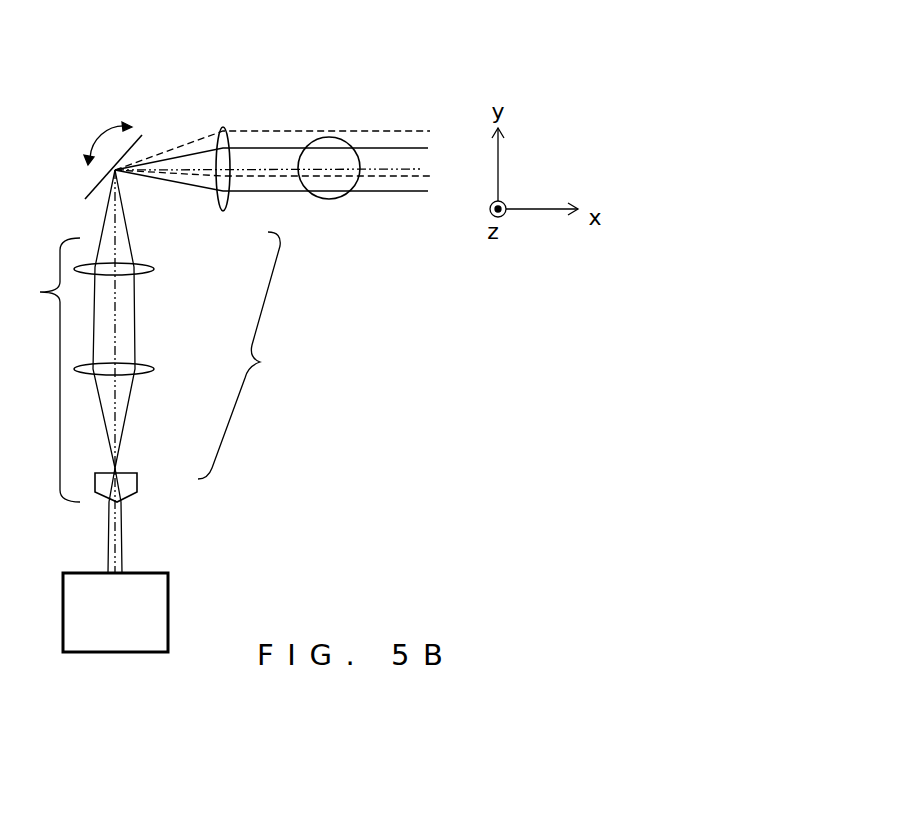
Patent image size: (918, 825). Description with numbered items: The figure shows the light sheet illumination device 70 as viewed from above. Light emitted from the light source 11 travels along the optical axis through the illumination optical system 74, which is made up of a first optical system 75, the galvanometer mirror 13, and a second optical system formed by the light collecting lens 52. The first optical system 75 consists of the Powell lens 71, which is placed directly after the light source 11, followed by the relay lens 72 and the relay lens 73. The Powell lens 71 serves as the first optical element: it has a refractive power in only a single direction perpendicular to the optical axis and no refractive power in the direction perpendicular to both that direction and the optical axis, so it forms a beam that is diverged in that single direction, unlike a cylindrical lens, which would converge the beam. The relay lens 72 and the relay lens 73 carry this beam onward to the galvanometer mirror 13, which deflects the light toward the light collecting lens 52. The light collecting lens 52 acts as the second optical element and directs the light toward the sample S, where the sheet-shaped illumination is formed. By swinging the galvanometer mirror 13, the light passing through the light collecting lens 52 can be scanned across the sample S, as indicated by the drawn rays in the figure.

The light sheet illumination device 70 is at (497, 48).
The galvanometer mirror 13 is at (97, 190).
The light collecting lens 52 is at (224, 210).
The scanning spot S is at (347, 139).
The relay lens 73 is at (155, 269).
The relay lens 72 is at (155, 368).
The Powell lens 71 is at (137, 483).
The light source 11 is at (168, 610).
The first optical system 75 is at (44, 370).
The illumination optical system 74 is at (244, 355).